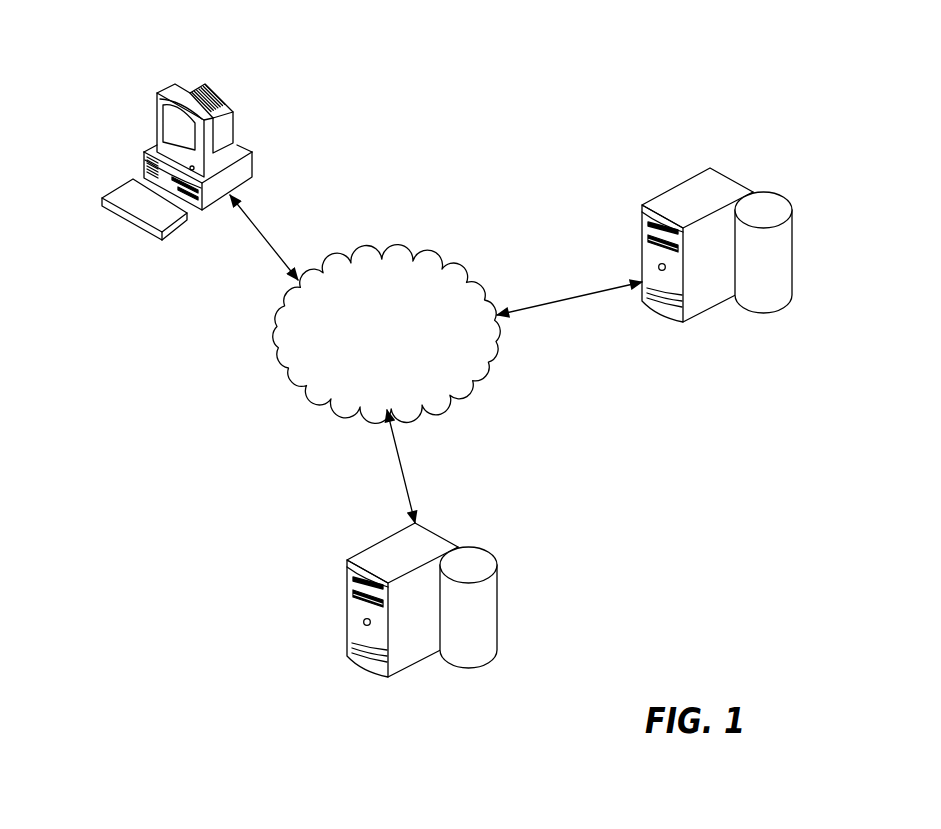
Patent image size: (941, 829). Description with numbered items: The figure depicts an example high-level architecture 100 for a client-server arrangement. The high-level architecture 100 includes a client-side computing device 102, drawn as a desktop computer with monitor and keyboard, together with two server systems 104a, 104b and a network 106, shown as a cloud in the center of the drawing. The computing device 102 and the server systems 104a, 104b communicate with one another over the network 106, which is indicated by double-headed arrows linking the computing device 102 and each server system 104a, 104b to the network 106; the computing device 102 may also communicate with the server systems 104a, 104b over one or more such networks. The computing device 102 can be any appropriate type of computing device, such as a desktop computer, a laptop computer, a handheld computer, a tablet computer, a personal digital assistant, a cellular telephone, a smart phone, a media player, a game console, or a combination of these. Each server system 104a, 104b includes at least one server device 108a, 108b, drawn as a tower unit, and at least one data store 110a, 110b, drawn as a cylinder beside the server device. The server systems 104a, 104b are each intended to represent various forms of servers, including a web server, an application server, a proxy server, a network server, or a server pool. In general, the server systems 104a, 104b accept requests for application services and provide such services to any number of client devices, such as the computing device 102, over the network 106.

The high-level architecture 100 is at (499, 108).
The computing device 102 is at (157, 95).
The server system 104a is at (803, 155).
The server system 104b is at (508, 512).
The network 106 is at (288, 375).
The server device 108a is at (642, 262).
The server device 108b is at (347, 620).
The data store 110a is at (793, 243).
The data store 110b is at (498, 600).